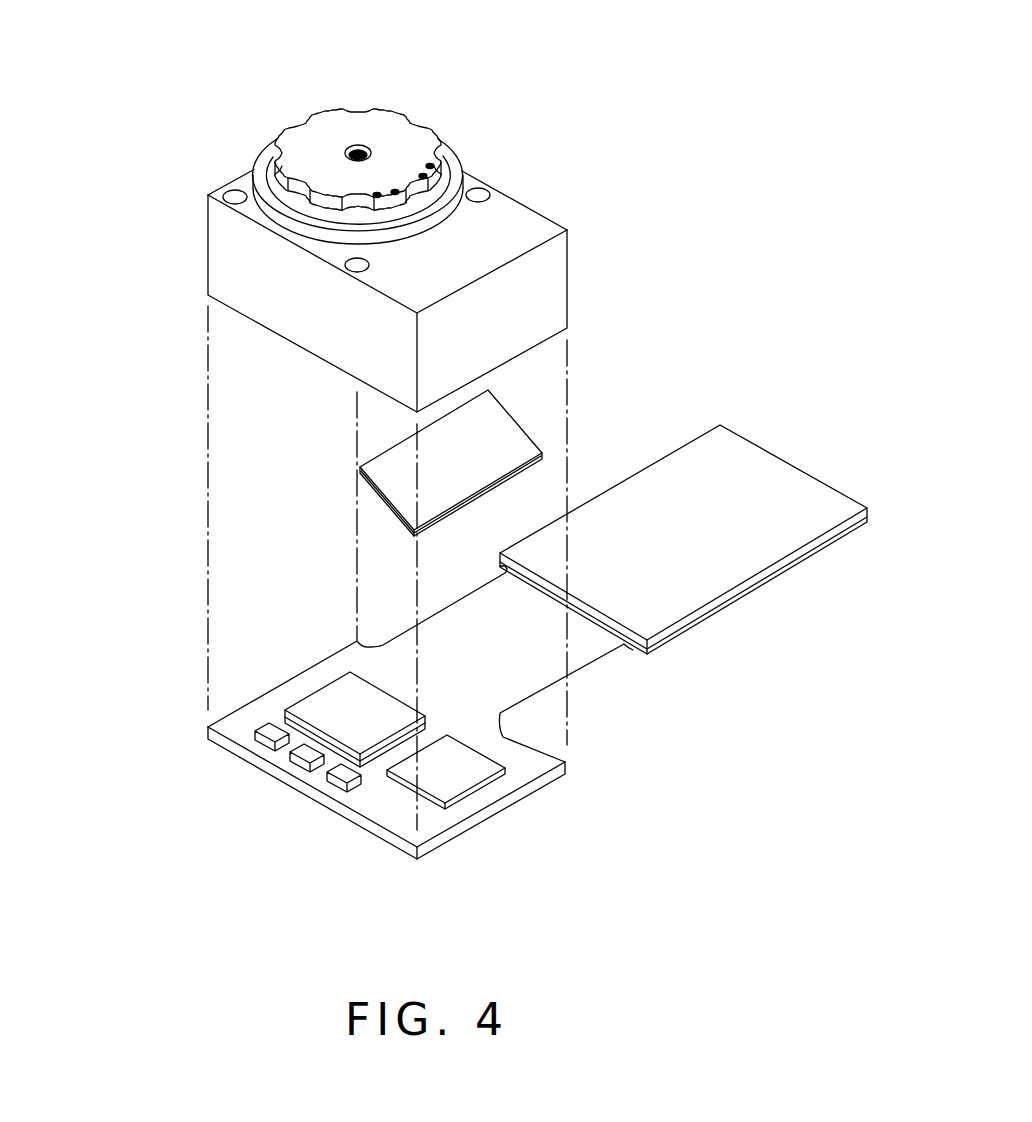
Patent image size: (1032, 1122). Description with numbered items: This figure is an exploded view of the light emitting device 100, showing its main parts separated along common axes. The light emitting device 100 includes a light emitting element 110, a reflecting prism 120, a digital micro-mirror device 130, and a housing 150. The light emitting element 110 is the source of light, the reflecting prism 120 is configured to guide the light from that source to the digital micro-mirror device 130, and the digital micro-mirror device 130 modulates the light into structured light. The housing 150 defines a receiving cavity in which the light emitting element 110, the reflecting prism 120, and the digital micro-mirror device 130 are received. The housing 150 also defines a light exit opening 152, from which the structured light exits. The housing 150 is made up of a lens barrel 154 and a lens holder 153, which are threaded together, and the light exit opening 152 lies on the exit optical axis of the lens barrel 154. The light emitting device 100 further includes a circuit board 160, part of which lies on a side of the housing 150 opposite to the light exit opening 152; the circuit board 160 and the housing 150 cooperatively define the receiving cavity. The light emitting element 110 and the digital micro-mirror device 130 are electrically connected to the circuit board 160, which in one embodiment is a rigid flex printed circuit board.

The light emitting device 100 is at (503, 59).
The light emitting element 110 is at (463, 768).
The reflecting prism 120 is at (503, 437).
The digital micro-mirror device 130 is at (317, 707).
The housing 150 is at (178, 111).
The light exit opening 152 is at (372, 150).
The lens holder 153 is at (233, 222).
The lens barrel 154 is at (295, 162).
The circuit board 160 is at (360, 658).